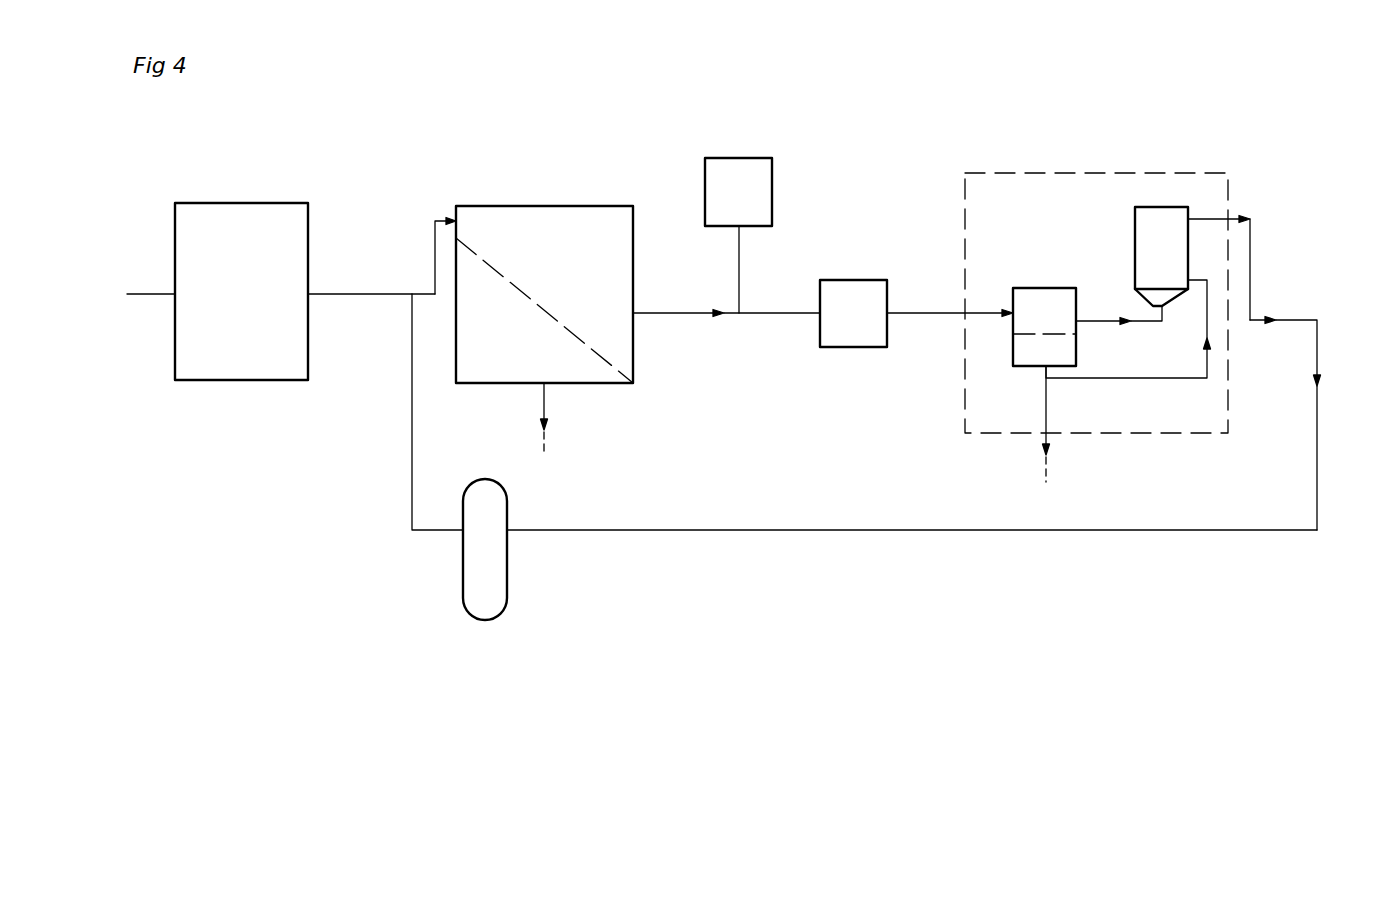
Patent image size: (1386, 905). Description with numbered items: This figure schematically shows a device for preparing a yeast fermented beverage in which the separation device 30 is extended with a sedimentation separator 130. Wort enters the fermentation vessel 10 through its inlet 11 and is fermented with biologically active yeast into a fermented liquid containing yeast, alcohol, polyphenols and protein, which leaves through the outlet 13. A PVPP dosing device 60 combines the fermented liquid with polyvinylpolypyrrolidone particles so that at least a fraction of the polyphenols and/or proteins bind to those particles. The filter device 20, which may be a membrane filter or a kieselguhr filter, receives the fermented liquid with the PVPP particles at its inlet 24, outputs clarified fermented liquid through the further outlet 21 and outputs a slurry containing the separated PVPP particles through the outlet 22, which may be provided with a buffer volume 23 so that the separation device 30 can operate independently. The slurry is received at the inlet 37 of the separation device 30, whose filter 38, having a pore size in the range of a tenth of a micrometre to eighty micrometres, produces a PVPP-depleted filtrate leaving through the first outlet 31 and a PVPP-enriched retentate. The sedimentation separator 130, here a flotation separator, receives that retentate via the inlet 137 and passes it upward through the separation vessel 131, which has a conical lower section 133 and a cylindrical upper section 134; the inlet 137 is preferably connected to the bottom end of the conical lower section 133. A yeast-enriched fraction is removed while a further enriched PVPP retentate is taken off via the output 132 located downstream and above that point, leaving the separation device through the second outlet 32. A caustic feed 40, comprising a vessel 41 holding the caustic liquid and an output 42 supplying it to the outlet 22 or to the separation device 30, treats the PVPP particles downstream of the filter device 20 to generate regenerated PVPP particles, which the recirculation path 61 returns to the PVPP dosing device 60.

The fermentation vessel 10 is at (262, 218).
The inlet 11 is at (152, 294).
The outlet 13 is at (393, 293).
The filter device 20 is at (553, 223).
The further outlet 21 is at (545, 387).
The outlet 22 is at (683, 313).
The buffer volume 23 is at (858, 291).
The inlet 24 is at (442, 222).
The separation device 30 is at (1057, 173).
The first outlet 31 is at (1047, 408).
The second outlet 32 is at (1262, 320).
The inlet 37 is at (937, 313).
The filter 38 is at (1047, 333).
The caustic feed 40 is at (722, 146).
The vessel 41 is at (764, 170).
The output 42 is at (740, 243).
The PVPP dosing device 60 is at (505, 500).
The recirculation path 61 is at (412, 448).
The sedimentation separator 130 is at (1154, 196).
The separation vessel 131 is at (1190, 280).
The output 132 is at (1210, 217).
The conical lower section 133 is at (1155, 296).
The cylindrical upper section 134 is at (1138, 227).
The inlet 137 is at (1110, 322).